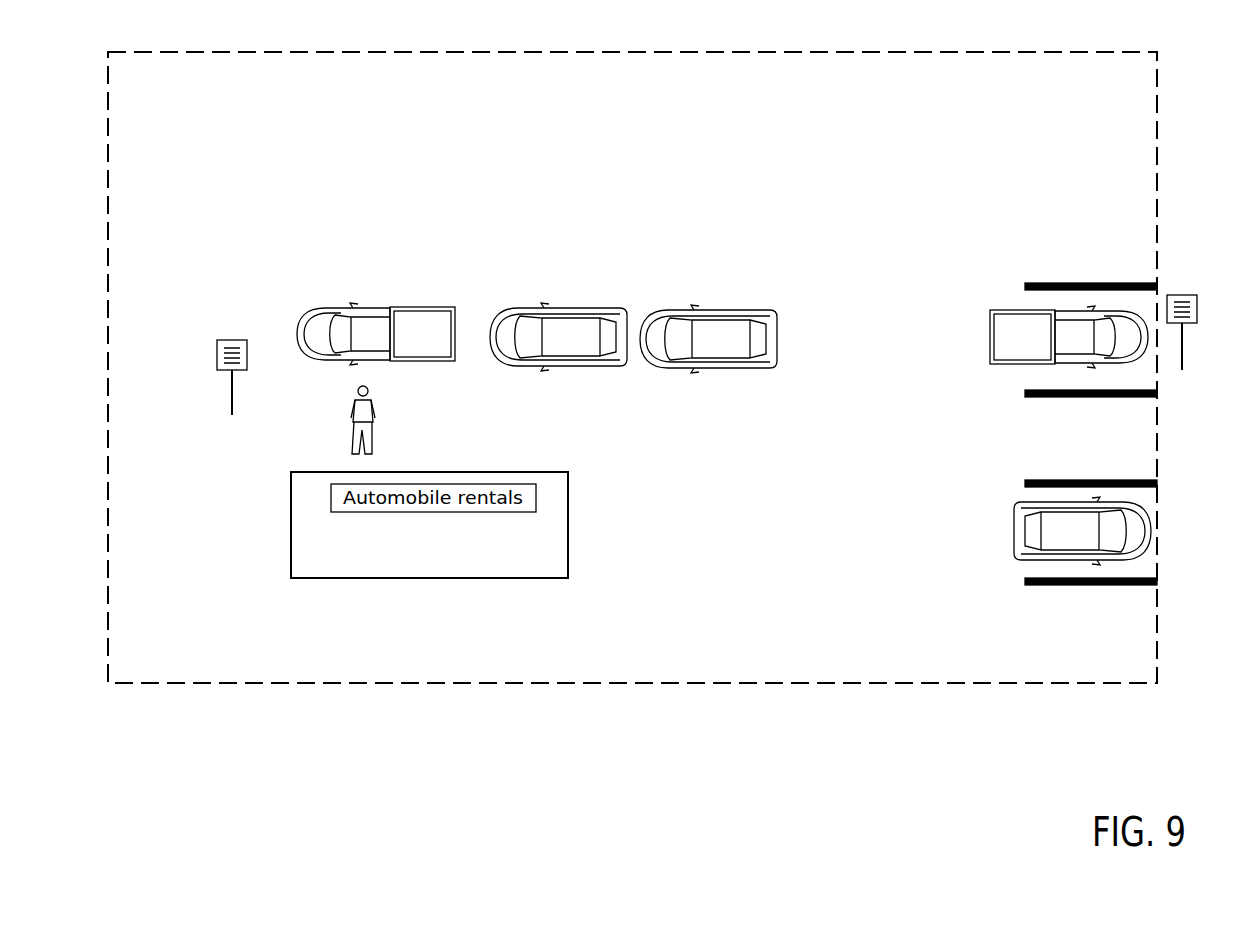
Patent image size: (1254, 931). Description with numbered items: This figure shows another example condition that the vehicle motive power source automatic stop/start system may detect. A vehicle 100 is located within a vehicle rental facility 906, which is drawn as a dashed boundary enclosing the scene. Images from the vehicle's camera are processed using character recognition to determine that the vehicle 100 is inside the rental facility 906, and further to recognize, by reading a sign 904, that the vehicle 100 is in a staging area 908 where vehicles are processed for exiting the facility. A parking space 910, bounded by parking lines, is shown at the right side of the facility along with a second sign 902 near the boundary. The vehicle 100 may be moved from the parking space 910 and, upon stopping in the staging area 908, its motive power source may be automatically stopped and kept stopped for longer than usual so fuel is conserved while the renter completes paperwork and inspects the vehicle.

The vehicle 100 is at (990, 310).
The sign 902 is at (1190, 325).
The sign 904 is at (243, 365).
The vehicle rental facility 906 is at (563, 684).
The staging area 908 is at (500, 252).
The parking space 910 is at (977, 250).